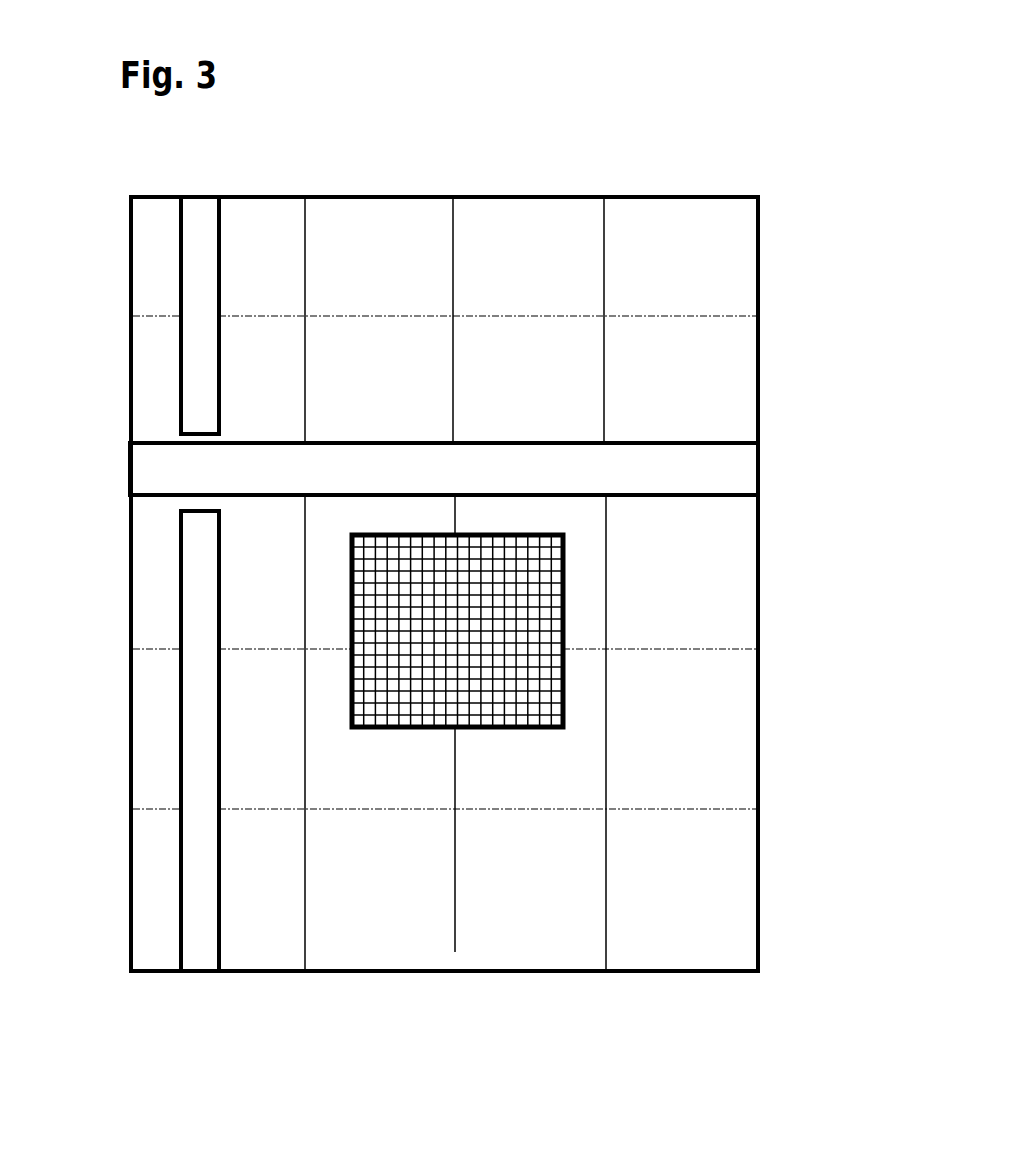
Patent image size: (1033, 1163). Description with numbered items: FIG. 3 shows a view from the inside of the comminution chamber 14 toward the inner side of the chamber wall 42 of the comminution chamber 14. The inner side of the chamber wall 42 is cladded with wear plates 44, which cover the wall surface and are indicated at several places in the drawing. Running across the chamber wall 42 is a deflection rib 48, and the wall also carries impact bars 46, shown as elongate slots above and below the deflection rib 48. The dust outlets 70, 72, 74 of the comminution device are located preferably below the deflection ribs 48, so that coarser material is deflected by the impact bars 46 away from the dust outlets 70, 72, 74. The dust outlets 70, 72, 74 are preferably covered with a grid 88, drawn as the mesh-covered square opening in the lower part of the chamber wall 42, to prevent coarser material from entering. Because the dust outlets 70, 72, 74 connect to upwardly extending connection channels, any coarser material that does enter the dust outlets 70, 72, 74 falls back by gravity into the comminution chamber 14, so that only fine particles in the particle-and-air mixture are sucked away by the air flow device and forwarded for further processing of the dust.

The comminution chamber 14 is at (470, 155).
The chamber wall 42 is at (521, 233).
The wear plates 44 is at (349, 383).
The impact bars 46 is at (200, 295).
The deflection ribs 48 is at (589, 465).
The dust outlet 70 is at (438, 822).
The dust outlet 72 is at (438, 822).
The dust outlet 74 is at (438, 822).
The grid 88 is at (518, 676).